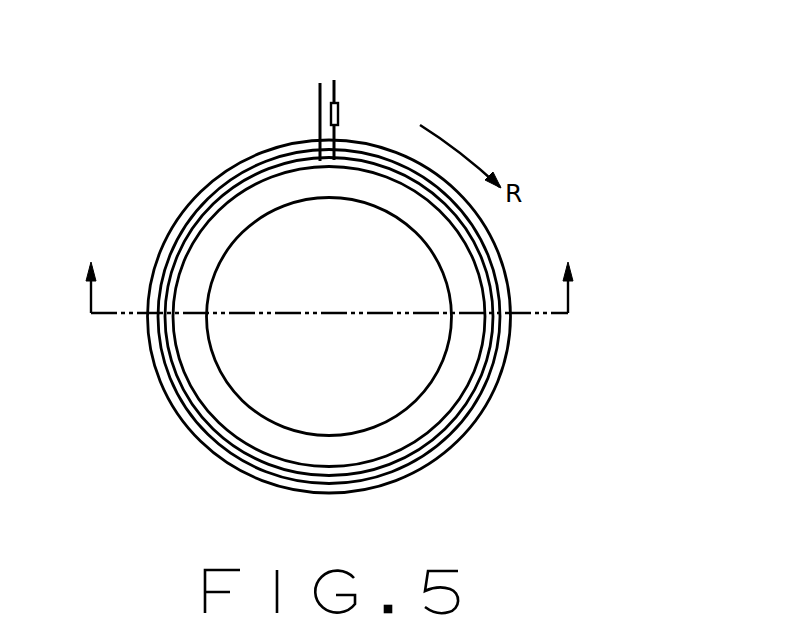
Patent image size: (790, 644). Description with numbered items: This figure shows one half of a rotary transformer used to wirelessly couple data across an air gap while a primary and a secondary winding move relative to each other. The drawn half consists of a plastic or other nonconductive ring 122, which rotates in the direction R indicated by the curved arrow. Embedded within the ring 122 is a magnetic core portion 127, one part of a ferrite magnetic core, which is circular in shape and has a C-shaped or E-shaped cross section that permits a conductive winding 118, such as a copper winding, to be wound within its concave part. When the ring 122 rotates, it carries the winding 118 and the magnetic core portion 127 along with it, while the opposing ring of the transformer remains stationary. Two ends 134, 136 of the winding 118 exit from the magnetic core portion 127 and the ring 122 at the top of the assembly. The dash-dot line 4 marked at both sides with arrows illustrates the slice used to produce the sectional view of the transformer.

The winding 118 is at (338, 112).
The ring 122 is at (500, 381).
The magnetic core portion 127 is at (495, 277).
The end of winding 134 is at (320, 84).
The end of winding 136 is at (334, 82).
The line 4- 4 is at (329, 274).